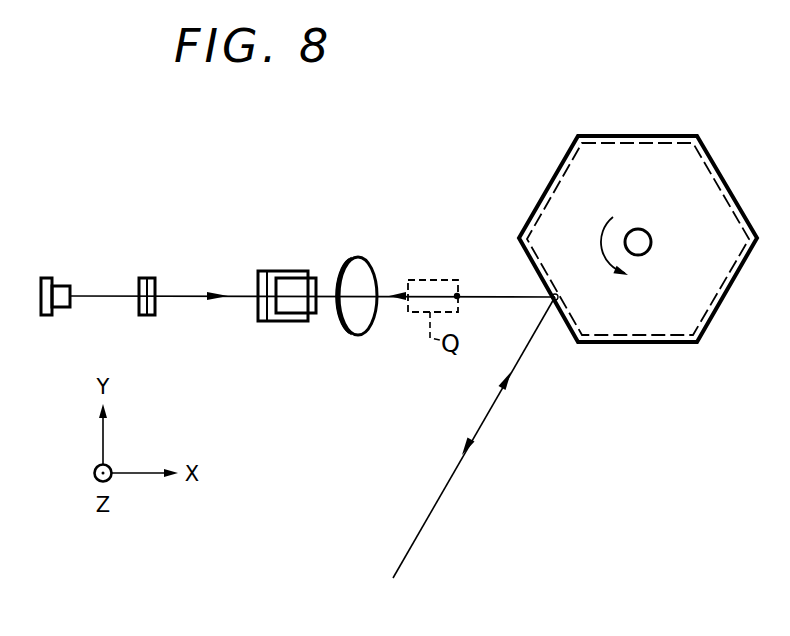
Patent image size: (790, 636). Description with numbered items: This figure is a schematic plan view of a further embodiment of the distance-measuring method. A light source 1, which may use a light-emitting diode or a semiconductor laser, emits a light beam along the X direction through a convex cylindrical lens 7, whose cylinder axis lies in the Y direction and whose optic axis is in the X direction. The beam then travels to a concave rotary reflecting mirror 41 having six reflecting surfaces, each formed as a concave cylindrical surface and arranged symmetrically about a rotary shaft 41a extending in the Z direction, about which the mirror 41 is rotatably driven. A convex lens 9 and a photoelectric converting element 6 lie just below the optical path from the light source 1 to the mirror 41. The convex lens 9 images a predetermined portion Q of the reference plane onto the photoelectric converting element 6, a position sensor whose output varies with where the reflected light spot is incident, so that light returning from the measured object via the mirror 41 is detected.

The light source 1 is at (63, 284).
The convex cylindrical lens 7 is at (144, 279).
The photoelectric converting element 6 is at (289, 272).
The convex lens 9 is at (370, 263).
The concave rotary reflecting mirror 41 is at (563, 202).
The rotary shaft 41a is at (642, 229).